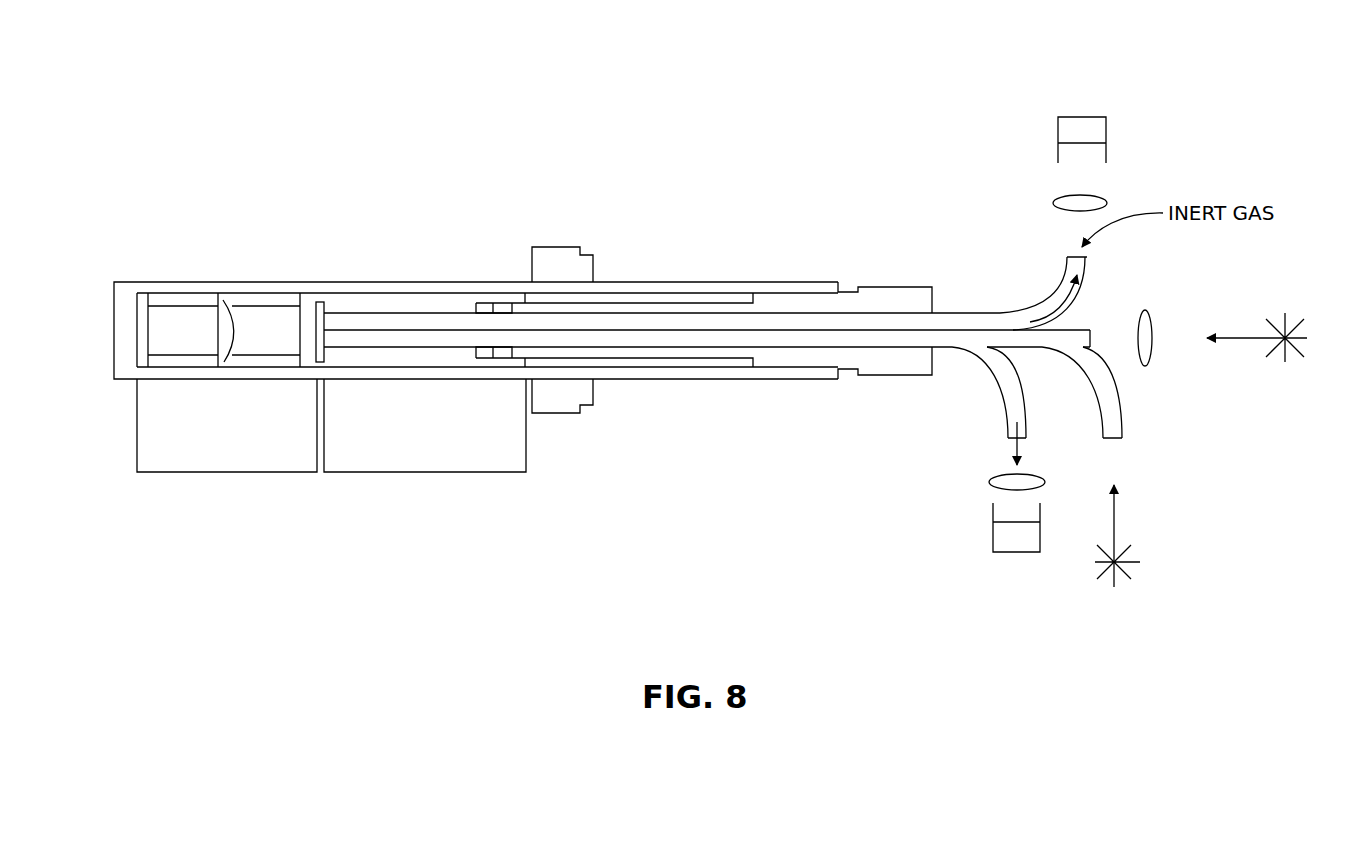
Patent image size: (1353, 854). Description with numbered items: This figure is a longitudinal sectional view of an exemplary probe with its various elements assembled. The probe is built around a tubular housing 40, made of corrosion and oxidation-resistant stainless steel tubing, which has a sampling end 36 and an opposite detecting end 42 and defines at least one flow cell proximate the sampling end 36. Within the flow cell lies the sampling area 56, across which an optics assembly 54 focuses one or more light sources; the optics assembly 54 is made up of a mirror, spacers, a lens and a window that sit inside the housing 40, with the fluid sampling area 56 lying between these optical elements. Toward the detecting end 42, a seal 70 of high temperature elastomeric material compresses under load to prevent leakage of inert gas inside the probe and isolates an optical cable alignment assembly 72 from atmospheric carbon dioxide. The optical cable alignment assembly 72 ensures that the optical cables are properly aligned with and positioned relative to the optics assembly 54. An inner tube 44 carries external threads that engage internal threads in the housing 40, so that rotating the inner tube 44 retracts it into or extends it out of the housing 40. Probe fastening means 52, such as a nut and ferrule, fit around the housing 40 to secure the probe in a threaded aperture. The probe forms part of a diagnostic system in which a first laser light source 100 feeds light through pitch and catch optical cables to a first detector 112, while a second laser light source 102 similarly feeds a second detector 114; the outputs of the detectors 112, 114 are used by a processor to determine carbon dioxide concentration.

The sampling end 36 is at (112, 332).
The sampling area 56 is at (180, 327).
The seal 70 is at (320, 305).
The probe fastening means 52 is at (560, 247).
The detecting end 42 is at (840, 287).
The housing 40 is at (780, 372).
The inner tube 44 is at (890, 358).
The optics assembly 54 is at (230, 472).
The optical cable alignment assembly 72 is at (428, 472).
The first detector 112 is at (1082, 117).
The second detector 114 is at (1017, 552).
The first laser light source 100 is at (1242, 338).
The second laser light source 102 is at (1120, 518).